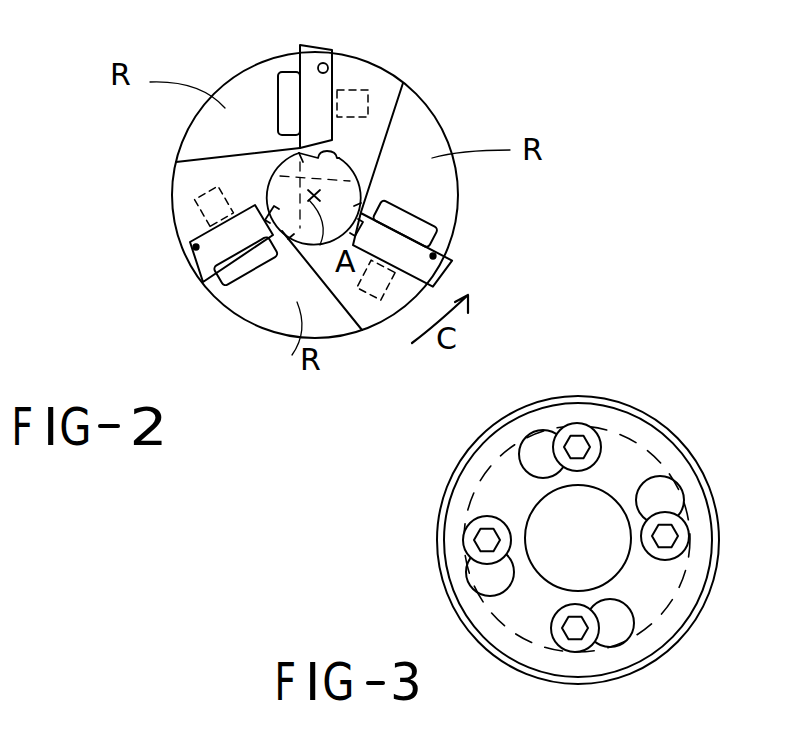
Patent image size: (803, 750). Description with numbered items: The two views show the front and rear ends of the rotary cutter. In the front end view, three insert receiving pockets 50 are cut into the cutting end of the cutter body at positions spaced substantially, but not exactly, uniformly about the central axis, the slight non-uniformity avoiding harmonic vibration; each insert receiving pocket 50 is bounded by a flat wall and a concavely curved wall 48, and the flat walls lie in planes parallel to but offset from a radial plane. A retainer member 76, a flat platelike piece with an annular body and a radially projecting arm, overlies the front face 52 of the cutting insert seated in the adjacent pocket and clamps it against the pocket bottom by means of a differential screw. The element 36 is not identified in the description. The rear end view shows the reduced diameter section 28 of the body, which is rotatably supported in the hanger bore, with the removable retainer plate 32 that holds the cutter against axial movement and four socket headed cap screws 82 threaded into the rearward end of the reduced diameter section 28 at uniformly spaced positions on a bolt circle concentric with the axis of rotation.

In FIG. 3, the reduced diameter section 28 is at (465, 514).
In FIG. 3, the removable retainer plate 32 is at (533, 420).
In FIG. 2, the cam 36 is at (343, 157).
In FIG. 2, the concavely curved wall 48 is at (192, 120).
In FIG. 2, the insert receiving pocket 50 is at (328, 66).
In FIG. 2, the front face 52 is at (298, 52).
In FIG. 2, the retainer member 76 is at (277, 92).
In FIG. 3, the socket headed cap screw 82 is at (598, 438).